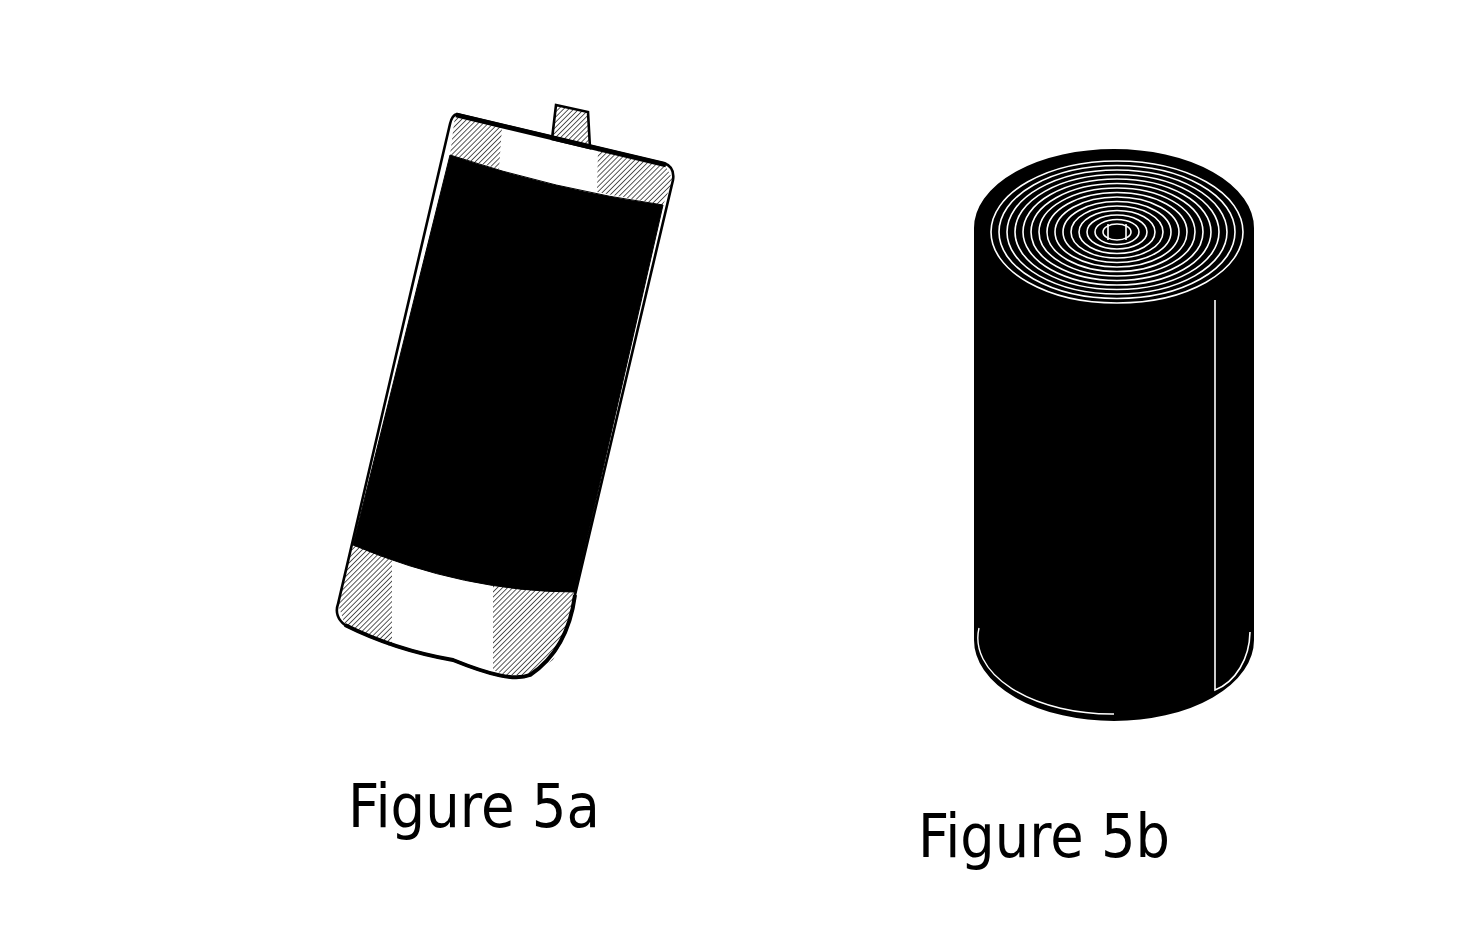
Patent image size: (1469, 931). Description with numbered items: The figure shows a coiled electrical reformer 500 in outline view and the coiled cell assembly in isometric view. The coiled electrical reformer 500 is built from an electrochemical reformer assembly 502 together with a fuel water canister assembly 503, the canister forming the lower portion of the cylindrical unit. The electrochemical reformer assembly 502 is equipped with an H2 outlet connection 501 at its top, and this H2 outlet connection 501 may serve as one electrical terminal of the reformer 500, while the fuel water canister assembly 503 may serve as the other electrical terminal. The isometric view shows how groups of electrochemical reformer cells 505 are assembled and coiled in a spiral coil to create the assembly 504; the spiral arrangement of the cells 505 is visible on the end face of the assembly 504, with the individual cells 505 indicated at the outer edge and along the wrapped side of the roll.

In FIG. 5A, the coiled electrical reformer 500 is at (262, 553).
In FIG. 5A, the H2 outlet connection 501 is at (590, 112).
In FIG. 5A, the electrochemical reformer assembly 502 is at (431, 227).
In FIG. 5A, the fuel water canister assembly 503 is at (353, 633).
In FIG. 5B, the assembly 504 is at (920, 632).
In FIG. 5B, the electrochemical reformer cells 505 is at (985, 194).